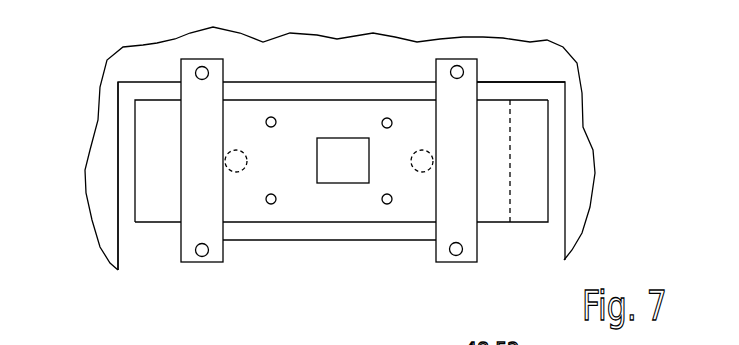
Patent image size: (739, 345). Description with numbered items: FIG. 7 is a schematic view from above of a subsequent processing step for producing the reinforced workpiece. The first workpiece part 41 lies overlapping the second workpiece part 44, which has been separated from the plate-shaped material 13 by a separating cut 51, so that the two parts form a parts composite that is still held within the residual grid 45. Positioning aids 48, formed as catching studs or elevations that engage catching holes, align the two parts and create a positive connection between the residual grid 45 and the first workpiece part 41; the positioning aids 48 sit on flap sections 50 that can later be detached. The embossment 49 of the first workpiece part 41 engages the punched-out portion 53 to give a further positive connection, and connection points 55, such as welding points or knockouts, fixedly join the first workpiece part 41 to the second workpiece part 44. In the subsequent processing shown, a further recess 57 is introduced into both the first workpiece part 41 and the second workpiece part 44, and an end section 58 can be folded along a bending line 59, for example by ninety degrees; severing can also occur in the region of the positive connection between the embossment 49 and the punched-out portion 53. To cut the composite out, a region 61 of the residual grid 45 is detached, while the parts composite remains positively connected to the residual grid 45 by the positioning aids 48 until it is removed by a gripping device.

The plate-shaped material 13 is at (84, 252).
The first workpiece part 41 is at (338, 117).
The second workpiece part 44 is at (152, 179).
The residual grid 45 is at (112, 247).
The positioning aids 48 is at (455, 65).
The embossment 49 is at (331, 229).
The flap sections 50 is at (463, 90).
The separating cut 51 is at (500, 93).
The punched-out portion 53 is at (236, 161).
The connection points 55 is at (267, 128).
The further recess 57 is at (339, 165).
The end section 58 is at (527, 205).
The bending line 59 is at (512, 201).
The region of the residual grid 61 is at (208, 275).